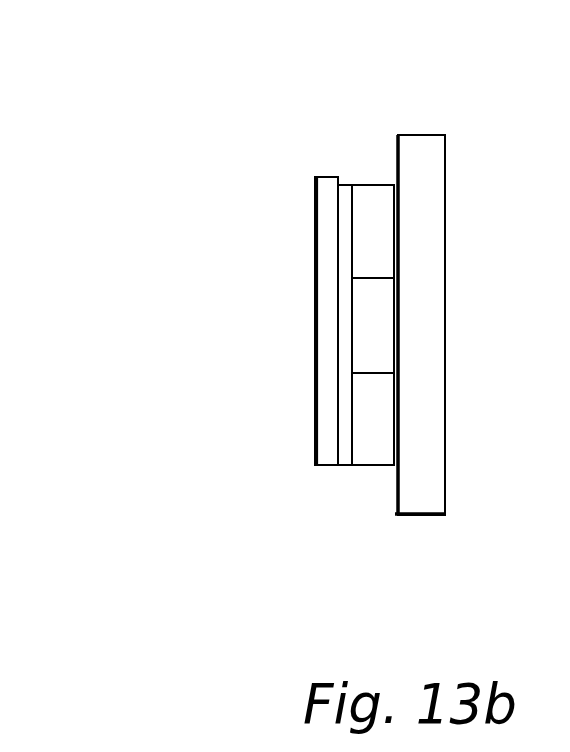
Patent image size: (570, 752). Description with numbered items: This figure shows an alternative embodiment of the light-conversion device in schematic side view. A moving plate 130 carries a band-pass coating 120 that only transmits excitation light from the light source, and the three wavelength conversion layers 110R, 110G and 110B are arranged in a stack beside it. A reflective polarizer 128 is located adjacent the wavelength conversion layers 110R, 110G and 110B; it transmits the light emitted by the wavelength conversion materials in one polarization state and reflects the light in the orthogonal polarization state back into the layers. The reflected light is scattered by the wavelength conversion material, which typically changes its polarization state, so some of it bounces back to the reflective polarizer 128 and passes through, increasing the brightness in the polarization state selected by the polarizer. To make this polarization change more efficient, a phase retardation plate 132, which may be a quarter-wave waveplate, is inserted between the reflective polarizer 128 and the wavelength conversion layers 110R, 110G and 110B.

The band-pass coating 120 is at (393, 162).
The reflective polarizer 128 is at (327, 217).
The moving plate 130 is at (417, 212).
The wavelength conversion layer 110B is at (367, 227).
The wavelength conversion layer 110G is at (373, 327).
The wavelength conversion layer 110R is at (373, 398).
The phase retardation plate 132 is at (344, 460).